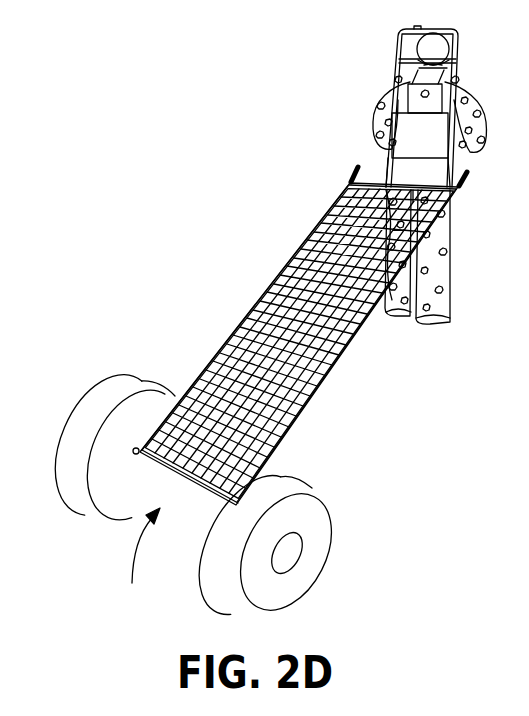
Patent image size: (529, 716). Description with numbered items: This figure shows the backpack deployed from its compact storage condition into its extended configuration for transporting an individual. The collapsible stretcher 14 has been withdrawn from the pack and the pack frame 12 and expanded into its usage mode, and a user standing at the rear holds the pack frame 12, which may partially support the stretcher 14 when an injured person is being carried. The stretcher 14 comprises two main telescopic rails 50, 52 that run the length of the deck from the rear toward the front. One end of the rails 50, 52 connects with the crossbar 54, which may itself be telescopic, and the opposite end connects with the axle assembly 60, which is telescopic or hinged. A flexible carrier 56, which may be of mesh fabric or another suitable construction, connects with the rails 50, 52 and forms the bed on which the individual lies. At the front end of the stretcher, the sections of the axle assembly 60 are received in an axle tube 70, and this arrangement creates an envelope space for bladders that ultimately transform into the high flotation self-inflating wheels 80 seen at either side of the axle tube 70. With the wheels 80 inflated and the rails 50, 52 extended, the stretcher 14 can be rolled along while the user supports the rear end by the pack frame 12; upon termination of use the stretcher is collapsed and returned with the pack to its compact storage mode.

The pack frame 12 is at (460, 45).
The collapsible stretcher 14 is at (347, 360).
The telescopic rail 50 is at (285, 260).
The telescopic rail 52 is at (375, 320).
The crossbar 54 is at (372, 182).
The flexible carrier 56 is at (256, 340).
The axle assembly 60 is at (139, 566).
The axle tube 70 is at (197, 502).
The self-inflating wheels 80 is at (97, 407).